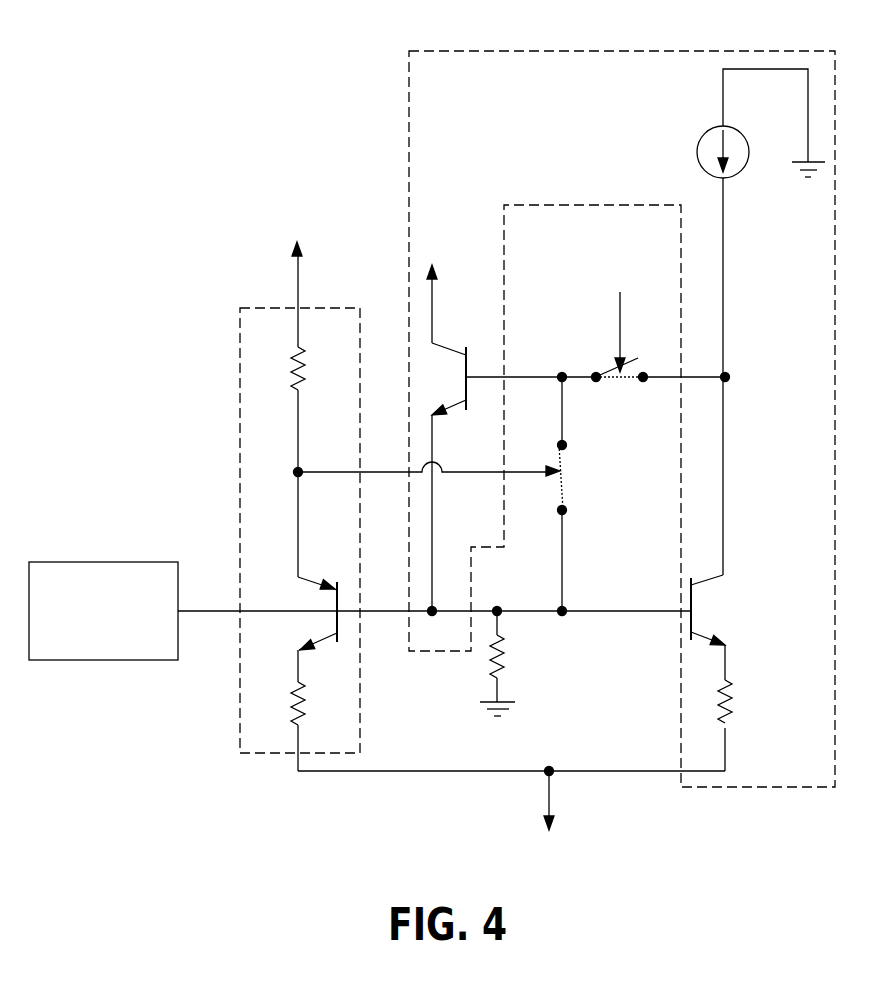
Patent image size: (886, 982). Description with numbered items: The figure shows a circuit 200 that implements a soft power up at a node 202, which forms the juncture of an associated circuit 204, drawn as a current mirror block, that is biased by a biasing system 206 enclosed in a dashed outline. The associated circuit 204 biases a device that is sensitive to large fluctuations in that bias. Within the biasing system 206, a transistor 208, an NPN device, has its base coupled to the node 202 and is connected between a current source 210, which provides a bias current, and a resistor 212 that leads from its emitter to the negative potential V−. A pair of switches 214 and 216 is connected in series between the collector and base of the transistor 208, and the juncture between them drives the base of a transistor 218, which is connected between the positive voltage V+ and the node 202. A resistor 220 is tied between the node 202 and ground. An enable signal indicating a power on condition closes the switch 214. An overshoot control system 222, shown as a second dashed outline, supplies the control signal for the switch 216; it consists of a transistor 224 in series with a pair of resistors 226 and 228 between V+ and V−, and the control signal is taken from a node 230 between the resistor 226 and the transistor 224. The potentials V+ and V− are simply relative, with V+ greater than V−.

The circuit 200 is at (296, 122).
The node 202 is at (537, 613).
The associated circuit 204 is at (142, 662).
The biasing system 206 is at (655, 38).
The transistor 208 is at (740, 603).
The current source 210 is at (741, 171).
The resistor 212 is at (735, 700).
The switch 214 is at (619, 402).
The switch 216 is at (588, 475).
The transistor 218 is at (430, 358).
The resistor 220 is at (492, 663).
The overshoot control system 222 is at (238, 342).
The transistor 224 is at (307, 592).
The resistor 226 is at (293, 380).
The resistor 228 is at (292, 702).
The node 230 is at (295, 470).